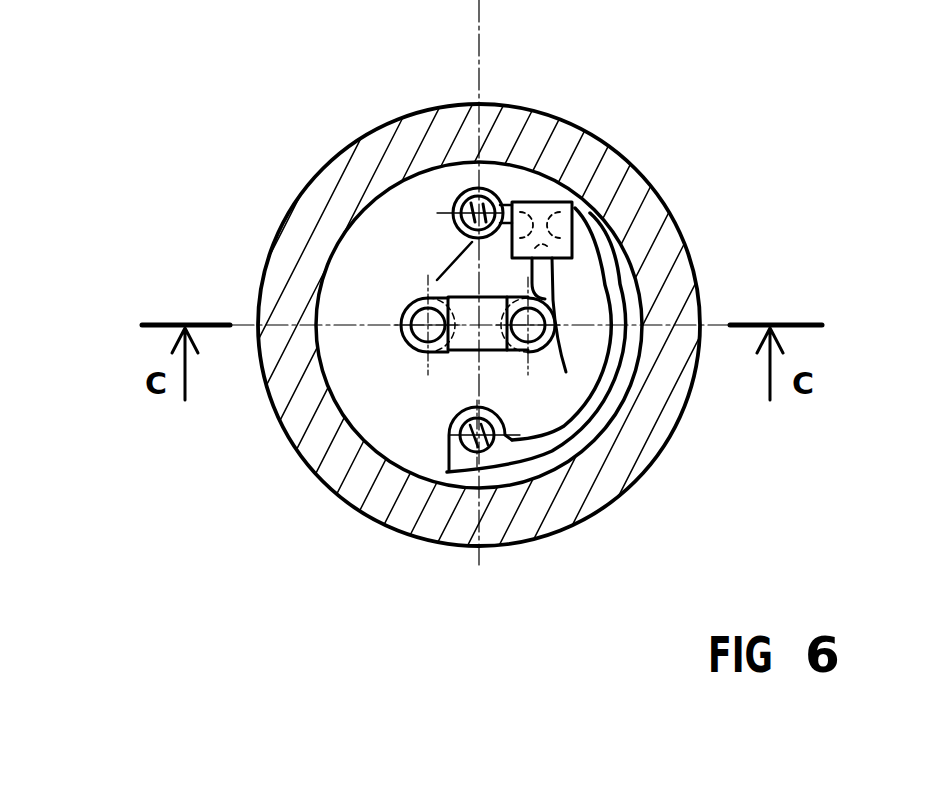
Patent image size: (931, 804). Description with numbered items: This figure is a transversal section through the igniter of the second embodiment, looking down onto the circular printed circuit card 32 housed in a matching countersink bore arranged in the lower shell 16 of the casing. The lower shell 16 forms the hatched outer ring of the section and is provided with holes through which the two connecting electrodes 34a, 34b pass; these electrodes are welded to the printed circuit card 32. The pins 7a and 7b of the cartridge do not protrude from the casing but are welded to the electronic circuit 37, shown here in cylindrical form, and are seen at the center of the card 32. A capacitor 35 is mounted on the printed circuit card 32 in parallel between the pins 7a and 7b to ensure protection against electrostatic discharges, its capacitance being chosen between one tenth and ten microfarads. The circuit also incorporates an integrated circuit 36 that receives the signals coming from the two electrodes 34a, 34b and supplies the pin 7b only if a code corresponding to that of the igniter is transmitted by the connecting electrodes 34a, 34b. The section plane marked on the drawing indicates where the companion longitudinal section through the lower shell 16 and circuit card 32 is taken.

The lower shell 16 is at (298, 227).
The printed circuit card 32 is at (410, 230).
The electronic circuit 37 is at (462, 270).
The pin 7a is at (414, 337).
The pin 7b is at (545, 338).
The connecting electrode 34a is at (463, 437).
The connecting electrode 34b is at (490, 190).
The integrated circuit 36 is at (552, 196).
The capacitor 35 is at (490, 352).